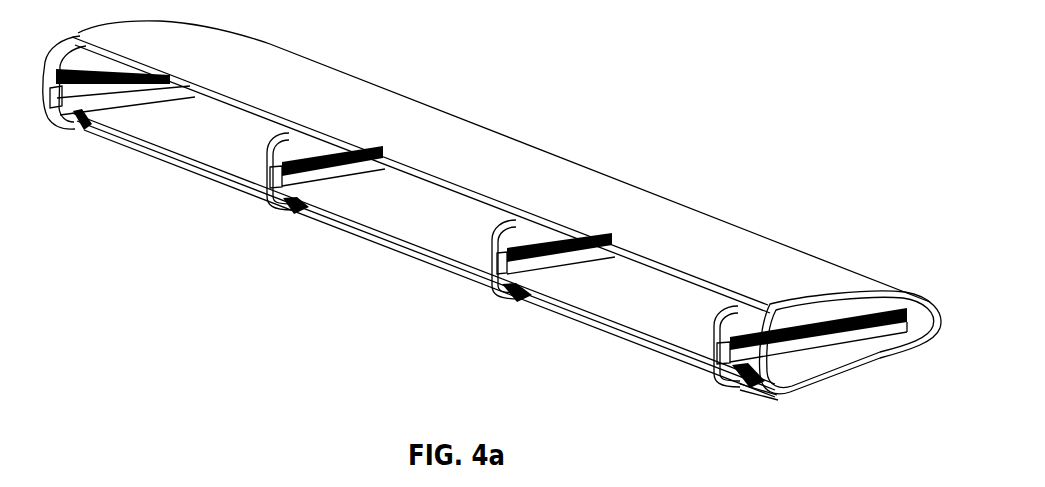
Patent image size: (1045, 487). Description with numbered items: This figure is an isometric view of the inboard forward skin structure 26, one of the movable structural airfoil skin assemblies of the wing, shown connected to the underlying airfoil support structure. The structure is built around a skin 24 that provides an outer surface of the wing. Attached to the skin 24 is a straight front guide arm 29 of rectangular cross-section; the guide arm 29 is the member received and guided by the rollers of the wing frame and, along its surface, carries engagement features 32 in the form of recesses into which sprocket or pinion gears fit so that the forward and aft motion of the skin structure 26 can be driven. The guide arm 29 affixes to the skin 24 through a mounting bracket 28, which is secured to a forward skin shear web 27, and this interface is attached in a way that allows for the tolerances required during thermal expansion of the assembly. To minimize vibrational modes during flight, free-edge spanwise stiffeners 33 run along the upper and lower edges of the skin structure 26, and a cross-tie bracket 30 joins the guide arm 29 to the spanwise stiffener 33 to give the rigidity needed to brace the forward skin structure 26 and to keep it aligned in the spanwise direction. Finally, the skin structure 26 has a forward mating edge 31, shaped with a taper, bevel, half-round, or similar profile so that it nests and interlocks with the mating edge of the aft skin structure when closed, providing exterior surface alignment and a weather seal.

The skin 24 is at (532, 181).
The inboard forward skin structure 26 is at (722, 102).
The forward skin shear web 27 is at (930, 301).
The mounting bracket 28 is at (925, 340).
The front guide arm 29 is at (330, 171).
The cross-tie bracket 30 is at (727, 381).
The forward mating edge 31 is at (413, 177).
The engagement feature 32 is at (817, 318).
The free-edge spanwise stiffener 33 is at (782, 390).